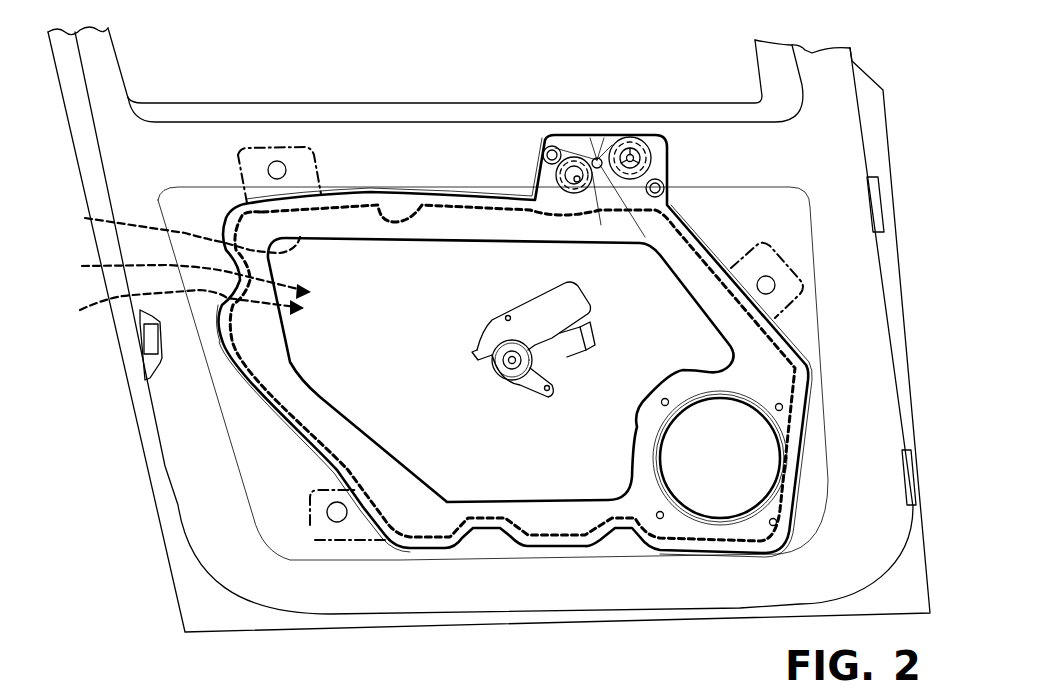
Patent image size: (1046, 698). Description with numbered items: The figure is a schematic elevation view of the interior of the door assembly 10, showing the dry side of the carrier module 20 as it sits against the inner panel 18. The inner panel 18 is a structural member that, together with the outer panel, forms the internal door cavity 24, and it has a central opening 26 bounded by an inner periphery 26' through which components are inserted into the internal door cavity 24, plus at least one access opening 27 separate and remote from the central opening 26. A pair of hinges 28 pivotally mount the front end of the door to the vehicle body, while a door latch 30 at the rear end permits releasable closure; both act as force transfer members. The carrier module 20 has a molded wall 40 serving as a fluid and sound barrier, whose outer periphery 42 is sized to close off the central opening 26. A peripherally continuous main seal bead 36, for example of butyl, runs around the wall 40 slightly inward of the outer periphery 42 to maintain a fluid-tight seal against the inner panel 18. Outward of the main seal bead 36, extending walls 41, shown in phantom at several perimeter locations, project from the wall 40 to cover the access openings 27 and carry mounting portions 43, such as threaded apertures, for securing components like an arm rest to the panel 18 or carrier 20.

The door assembly 10 is at (910, 102).
The inner panel 18 is at (806, 333).
The carrier module 20 is at (285, 381).
The internal door cavity 24 is at (936, 340).
The central opening 26 is at (180, 277).
The inner periphery 26' is at (172, 229).
The access opening 27 is at (623, 157).
The hinges 28 is at (878, 203).
The door latch 30 is at (150, 345).
The main seal bead 36 is at (420, 205).
The wall 40 is at (473, 232).
The extending wall 41 is at (276, 146).
The outer periphery 42 is at (322, 438).
The mounting portions 43 is at (268, 164).